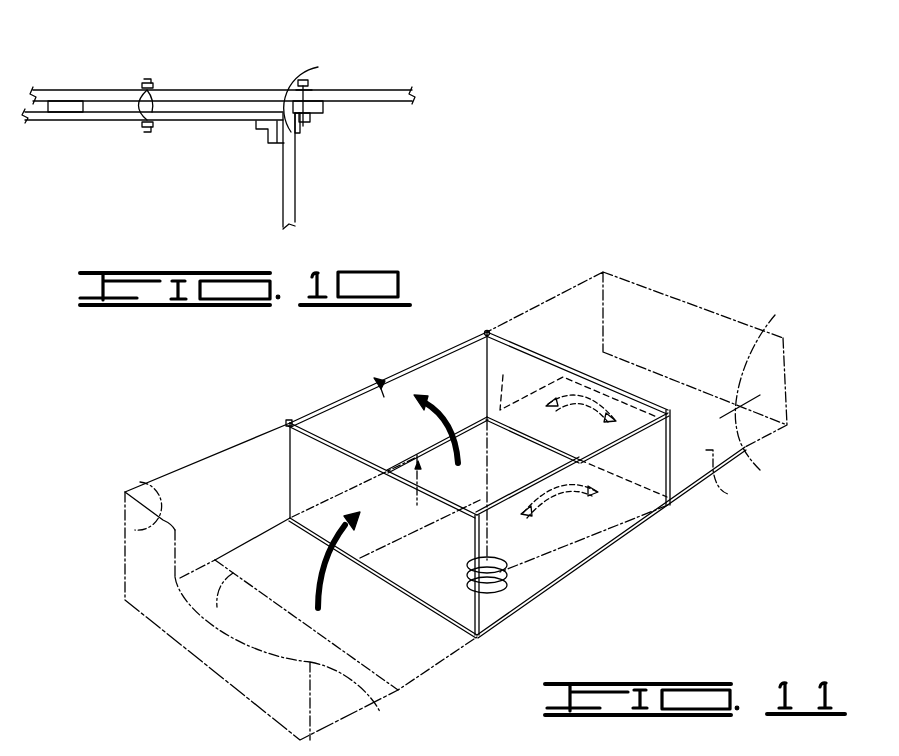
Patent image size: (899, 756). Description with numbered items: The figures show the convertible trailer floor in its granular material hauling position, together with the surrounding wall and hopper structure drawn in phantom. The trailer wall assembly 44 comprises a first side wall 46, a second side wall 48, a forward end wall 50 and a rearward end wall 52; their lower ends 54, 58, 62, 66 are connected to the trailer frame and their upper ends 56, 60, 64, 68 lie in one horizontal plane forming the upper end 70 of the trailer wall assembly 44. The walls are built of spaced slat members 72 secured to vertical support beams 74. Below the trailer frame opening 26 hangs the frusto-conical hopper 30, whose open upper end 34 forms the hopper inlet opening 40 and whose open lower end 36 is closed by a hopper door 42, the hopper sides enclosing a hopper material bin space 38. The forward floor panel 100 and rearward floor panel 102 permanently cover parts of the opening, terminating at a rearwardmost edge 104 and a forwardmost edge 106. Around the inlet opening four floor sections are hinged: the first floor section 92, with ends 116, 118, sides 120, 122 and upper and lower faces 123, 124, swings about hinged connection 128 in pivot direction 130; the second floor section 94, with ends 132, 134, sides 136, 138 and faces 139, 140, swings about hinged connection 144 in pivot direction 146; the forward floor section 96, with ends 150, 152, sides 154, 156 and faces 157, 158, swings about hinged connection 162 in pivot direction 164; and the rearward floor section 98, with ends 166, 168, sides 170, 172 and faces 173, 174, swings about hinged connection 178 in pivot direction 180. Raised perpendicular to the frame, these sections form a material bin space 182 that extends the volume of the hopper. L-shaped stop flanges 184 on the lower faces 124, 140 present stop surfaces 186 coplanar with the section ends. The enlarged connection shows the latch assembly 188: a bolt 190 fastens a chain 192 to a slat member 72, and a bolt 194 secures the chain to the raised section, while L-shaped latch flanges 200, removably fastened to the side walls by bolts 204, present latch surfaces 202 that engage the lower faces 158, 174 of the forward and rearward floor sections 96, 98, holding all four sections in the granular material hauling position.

In FIG. 11, the trailer frame opening 26 is at (413, 655).
In FIG. 11, the hopper 30 is at (560, 585).
In FIG. 11, the open upper end 34 is at (463, 427).
In FIG. 11, the open lower end 36 is at (492, 600).
In FIG. 11, the hopper material bin space 38 is at (515, 374).
In FIG. 11, the hopper inlet opening 40 is at (418, 500).
In FIG. 11, the hopper door 42 is at (488, 597).
In FIG. 10, the trailer wall assembly 44 is at (393, 67).
In FIG. 11, the trailer wall assembly 44 is at (157, 464).
In FIG. 10, the first side wall 46 is at (256, 71).
In FIG. 11, the first side wall 46 is at (233, 442).
In FIG. 10, the second side wall 48 is at (202, 72).
In FIG. 11, the second side wall 48 is at (747, 372).
In FIG. 11, the forward end wall 50 is at (156, 527).
In FIG. 11, the rearward end wall 52 is at (628, 266).
In FIG. 11, the lower end 54 is at (563, 377).
In FIG. 11, the upper end 56 is at (548, 297).
In FIG. 11, the lower end 58 is at (760, 470).
In FIG. 11, the upper end 60 is at (773, 325).
In FIG. 11, the lower end 62 is at (217, 677).
In FIG. 11, the upper end 64 is at (140, 478).
In FIG. 11, the lower end 66 is at (675, 377).
In FIG. 11, the upper end 68 is at (647, 288).
In FIG. 11, the upper end of the trailer wall assembly 70 is at (189, 446).
In FIG. 10, the slat members 72 is at (390, 90).
In FIG. 10, the vertical support beams 74 is at (68, 112).
In FIG. 10, the first floor section 92 is at (163, 157).
In FIG. 11, the first floor section 92 is at (333, 410).
In FIG. 10, the second floor section 94 is at (175, 122).
In FIG. 11, the second floor section 94 is at (624, 432).
In FIG. 10, the forward floor section 96 is at (340, 211).
In FIG. 11, the forward floor section 96 is at (290, 468).
In FIG. 10, the rearward floor section 98 is at (294, 212).
In FIG. 11, the rearward floor section 98 is at (526, 345).
In FIG. 11, the forward floor panel 100 is at (233, 577).
In FIG. 11, the rearward floor panel 102 is at (743, 405).
In FIG. 11, the rearwardmost edge 104 is at (258, 593).
In FIG. 11, the forwardmost edge 106 is at (733, 478).
In FIG. 11, the end 116 is at (285, 420).
In FIG. 11, the end 118 is at (497, 322).
In FIG. 11, the side 120 is at (428, 452).
In FIG. 11, the side 122 is at (352, 385).
In FIG. 10, the upper face 123 is at (278, 70).
In FIG. 10, the lower face 124 is at (152, 138).
In FIG. 11, the lower face 124 is at (350, 398).
In FIG. 11, the hinged connection 128 is at (397, 462).
In FIG. 11, the pivot direction 130 is at (437, 415).
In FIG. 11, the end 132 is at (472, 513).
In FIG. 11, the end 134 is at (668, 412).
In FIG. 11, the side 136 is at (590, 560).
In FIG. 11, the side 138 is at (603, 472).
In FIG. 10, the upper face 139 is at (220, 110).
In FIG. 11, the upper face 139 is at (630, 518).
In FIG. 10, the lower face 140 is at (190, 123).
In FIG. 11, the lower face 140 is at (498, 495).
In FIG. 11, the hinged connection 144 is at (527, 603).
In FIG. 11, the pivot direction 146 is at (537, 510).
In FIG. 11, the end 150 is at (455, 557).
In FIG. 11, the end 152 is at (290, 447).
In FIG. 11, the side 154 is at (355, 463).
In FIG. 11, the side 156 is at (310, 536).
In FIG. 10, the upper face 157 is at (230, 211).
In FIG. 11, the upper face 157 is at (308, 432).
In FIG. 10, the lower face 158 is at (359, 171).
In FIG. 11, the lower face 158 is at (412, 478).
In FIG. 11, the hinged connection 162 is at (418, 603).
In FIG. 11, the pivot direction 164 is at (328, 570).
In FIG. 11, the end 166 is at (672, 450).
In FIG. 11, the end 168 is at (467, 343).
In FIG. 11, the side 170 is at (612, 357).
In FIG. 11, the side 172 is at (553, 450).
In FIG. 10, the upper face 173 is at (283, 207).
In FIG. 11, the upper face 173 is at (527, 345).
In FIG. 10, the lower face 174 is at (297, 183).
In FIG. 11, the lower face 174 is at (545, 352).
In FIG. 11, the hinged connection 178 is at (576, 418).
In FIG. 11, the pivot direction 180 is at (592, 432).
In FIG. 11, the material bin space 182 is at (381, 376).
In FIG. 10, the L-shaped stop flanges 184 is at (263, 128).
In FIG. 10, the stop surface 186 is at (285, 140).
In FIG. 10, the latch assembly 188 is at (116, 74).
In FIG. 10, the bolt 190 is at (150, 84).
In FIG. 10, the chain 192 is at (140, 110).
In FIG. 10, the bolt 194 is at (147, 130).
In FIG. 10, the L-shaped latch flanges 200 is at (299, 131).
In FIG. 10, the latch surface 202 is at (288, 79).
In FIG. 10, the bolts 204 is at (323, 88).